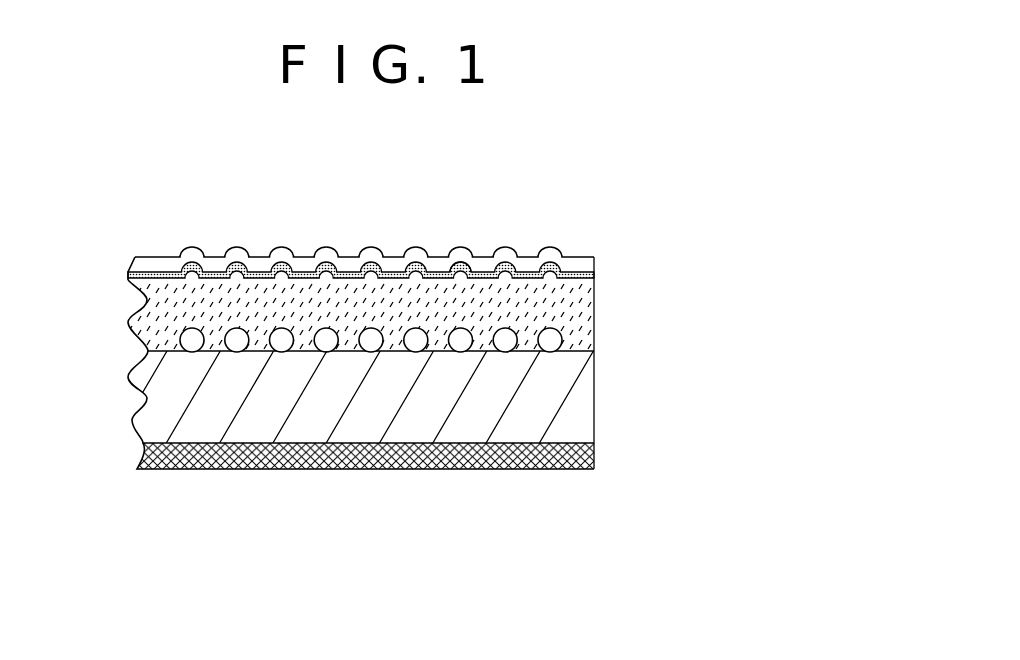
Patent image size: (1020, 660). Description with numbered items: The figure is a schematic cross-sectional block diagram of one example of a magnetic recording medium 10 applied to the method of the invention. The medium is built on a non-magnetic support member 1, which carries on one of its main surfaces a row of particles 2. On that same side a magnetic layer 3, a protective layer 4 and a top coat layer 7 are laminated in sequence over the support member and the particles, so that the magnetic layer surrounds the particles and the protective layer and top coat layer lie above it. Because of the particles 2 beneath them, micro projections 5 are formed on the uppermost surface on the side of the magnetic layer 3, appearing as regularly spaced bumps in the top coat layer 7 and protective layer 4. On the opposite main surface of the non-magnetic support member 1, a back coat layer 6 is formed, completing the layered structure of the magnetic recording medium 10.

The non-magnetic support member 1 is at (168, 405).
The particles 2 is at (553, 338).
The magnetic layer 3 is at (168, 303).
The protective layer 4 is at (594, 278).
The micro projections 5 is at (460, 276).
The back coat layer 6 is at (585, 455).
The top coat layer 7 is at (192, 257).
The magnetic recording medium 10 is at (557, 579).